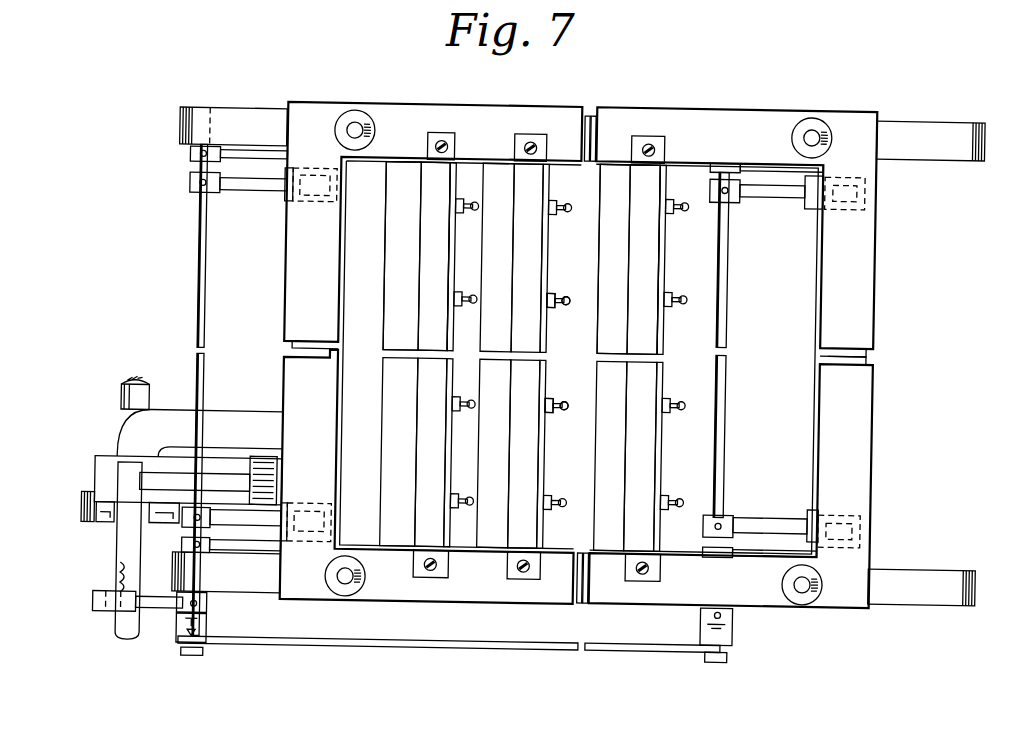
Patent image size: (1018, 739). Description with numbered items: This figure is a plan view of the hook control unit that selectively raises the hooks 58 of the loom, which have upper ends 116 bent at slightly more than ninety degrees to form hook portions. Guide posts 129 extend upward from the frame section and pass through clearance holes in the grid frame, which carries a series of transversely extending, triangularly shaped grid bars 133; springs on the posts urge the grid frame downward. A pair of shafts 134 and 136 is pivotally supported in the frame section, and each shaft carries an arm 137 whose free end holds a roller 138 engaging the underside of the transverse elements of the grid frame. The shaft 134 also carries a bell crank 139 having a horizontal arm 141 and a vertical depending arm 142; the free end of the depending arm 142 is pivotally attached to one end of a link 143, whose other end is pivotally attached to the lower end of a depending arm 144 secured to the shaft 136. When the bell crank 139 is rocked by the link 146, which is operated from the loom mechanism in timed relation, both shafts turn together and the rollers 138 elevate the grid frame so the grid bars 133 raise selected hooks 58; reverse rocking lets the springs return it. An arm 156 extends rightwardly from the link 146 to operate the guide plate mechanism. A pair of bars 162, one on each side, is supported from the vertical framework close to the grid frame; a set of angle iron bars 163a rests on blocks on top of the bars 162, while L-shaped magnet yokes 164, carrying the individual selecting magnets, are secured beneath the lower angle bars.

The guide posts 129 is at (356, 128).
The angle iron bars 163a is at (400, 170).
The magnet yokes 164 is at (458, 202).
The bars 162 is at (596, 115).
The arms 137 is at (258, 188).
The rollers 138 is at (340, 184).
The upper ends 116 is at (560, 290).
The hooks 58 is at (560, 307).
The shaft 134 is at (195, 346).
The shaft 136 is at (728, 372).
The grid bars 133 is at (428, 425).
The arm 156 is at (228, 478).
The link 146 is at (132, 472).
The horizontal arm 141 is at (95, 604).
The depending arm 142 is at (211, 633).
The bell crank 139 is at (165, 628).
The link 143 is at (588, 652).
The depending arm 144 is at (726, 638).